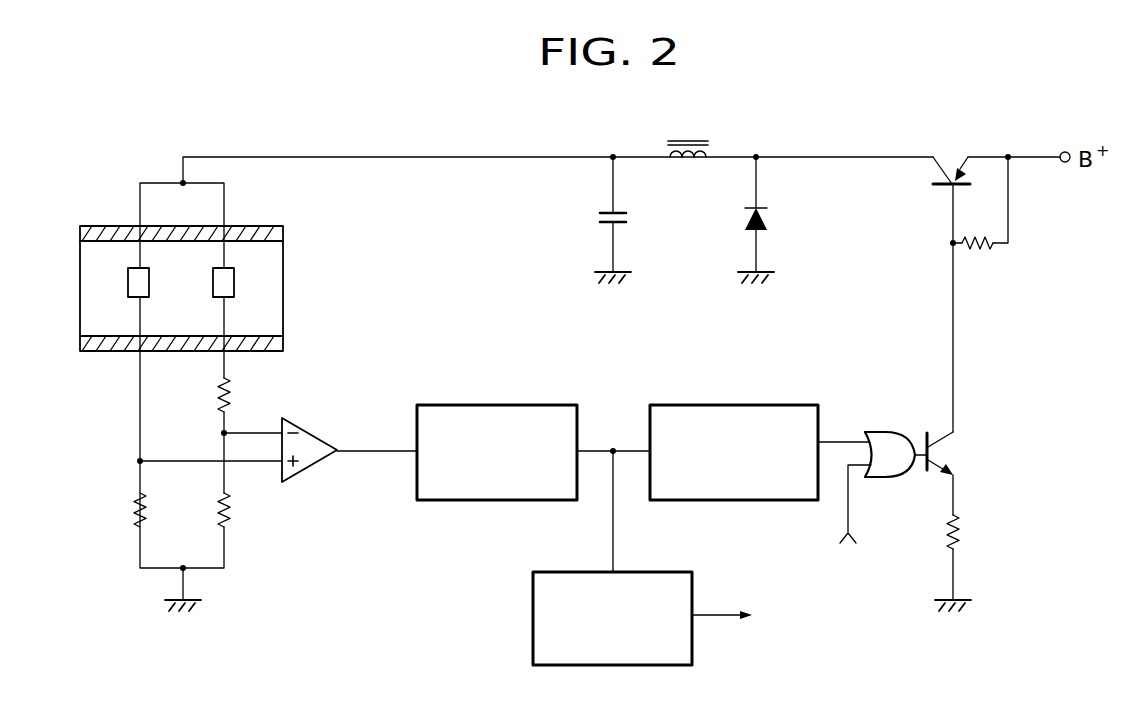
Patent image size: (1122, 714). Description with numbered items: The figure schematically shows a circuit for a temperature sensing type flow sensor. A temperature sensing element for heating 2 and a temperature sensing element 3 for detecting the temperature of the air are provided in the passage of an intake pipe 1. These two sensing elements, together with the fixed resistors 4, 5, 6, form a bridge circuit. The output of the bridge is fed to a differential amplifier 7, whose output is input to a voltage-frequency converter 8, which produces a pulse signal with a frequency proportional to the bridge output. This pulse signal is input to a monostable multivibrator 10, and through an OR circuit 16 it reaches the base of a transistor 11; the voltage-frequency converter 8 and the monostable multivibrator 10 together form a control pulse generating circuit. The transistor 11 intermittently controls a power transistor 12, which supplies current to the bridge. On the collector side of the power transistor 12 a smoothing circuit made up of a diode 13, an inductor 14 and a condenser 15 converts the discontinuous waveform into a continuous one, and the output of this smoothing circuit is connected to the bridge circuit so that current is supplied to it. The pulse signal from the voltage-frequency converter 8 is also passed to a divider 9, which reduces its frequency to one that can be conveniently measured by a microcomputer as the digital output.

The intake pipe 1 is at (108, 224).
The temperature sensing element for heating 2 is at (128, 287).
The temperature sensing element 3 is at (234, 283).
The fixed resistor 4 is at (235, 402).
The fixed resistor 5 is at (237, 512).
The fixed resistor 6 is at (130, 510).
The differential amplifier 7 is at (310, 474).
The voltage-frequency converter 8 is at (497, 405).
The divider 9 is at (628, 572).
The monostable multivibrator 10 is at (745, 405).
The transistor 11 is at (945, 447).
The power transistor 12 is at (957, 178).
The diode 13 is at (770, 218).
The inductor 14 is at (690, 137).
The condenser 15 is at (629, 218).
The OR circuit 16 is at (890, 425).